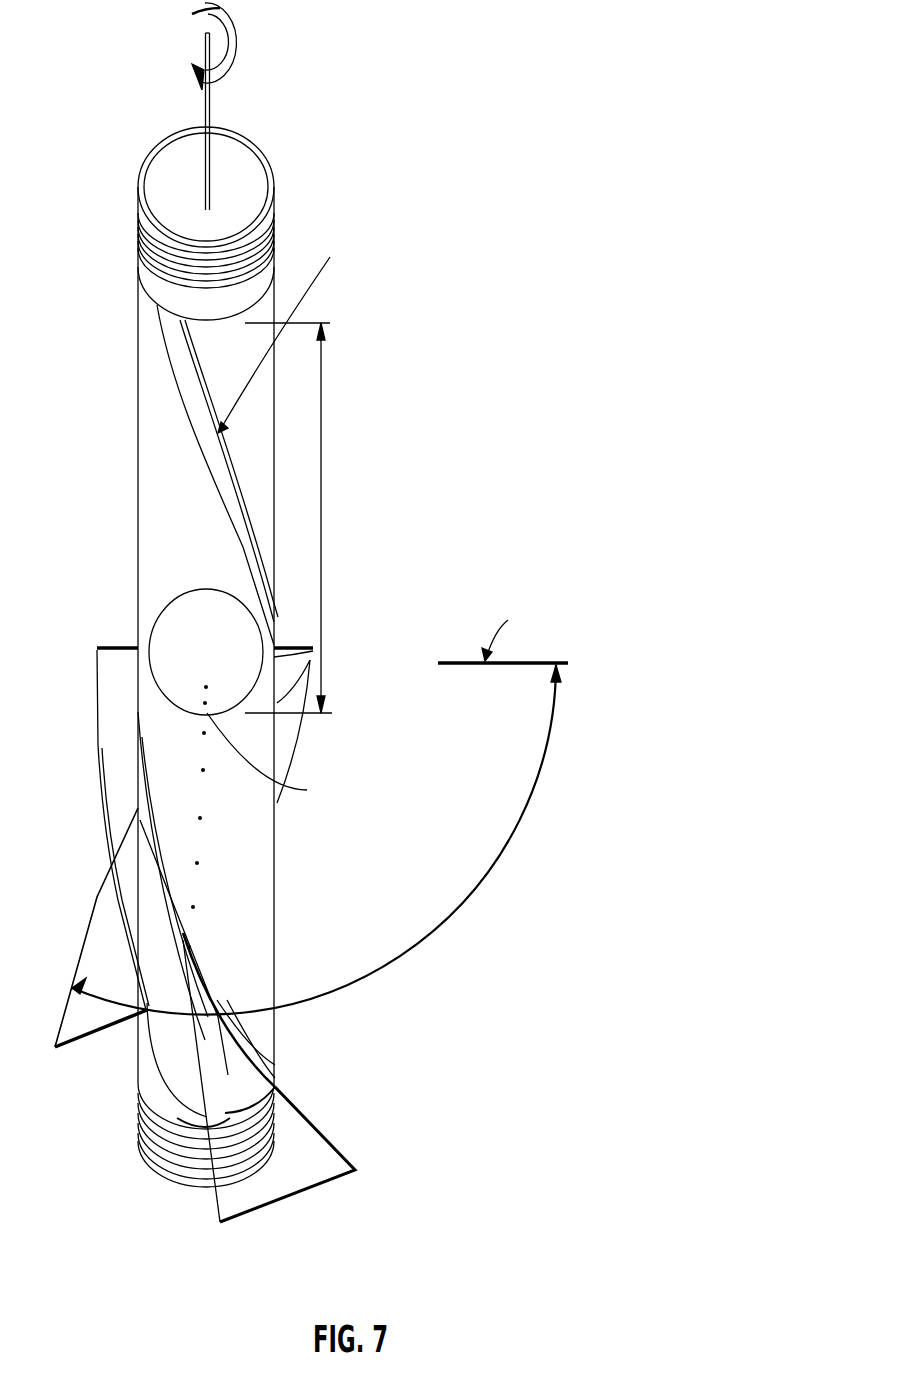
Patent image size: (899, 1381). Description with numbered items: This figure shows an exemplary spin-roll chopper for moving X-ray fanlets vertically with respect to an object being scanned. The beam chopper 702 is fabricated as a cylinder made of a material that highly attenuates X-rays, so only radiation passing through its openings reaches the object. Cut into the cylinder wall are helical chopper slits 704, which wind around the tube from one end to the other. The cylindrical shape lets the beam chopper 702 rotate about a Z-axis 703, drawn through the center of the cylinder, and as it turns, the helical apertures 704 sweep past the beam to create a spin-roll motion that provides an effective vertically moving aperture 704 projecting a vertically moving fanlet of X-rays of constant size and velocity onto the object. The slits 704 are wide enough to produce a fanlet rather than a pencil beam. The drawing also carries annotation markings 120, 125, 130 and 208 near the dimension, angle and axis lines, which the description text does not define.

The beam chopper 702 is at (155, 177).
The Z-axis 703 is at (202, 110).
The helical chopper slits 704 is at (182, 367).
The helical flight pitch 120 is at (338, 517).
The angular offset of flight 125 is at (395, 980).
The lower blade plane 130 is at (163, 1037).
The y axis reference 208 is at (551, 662).